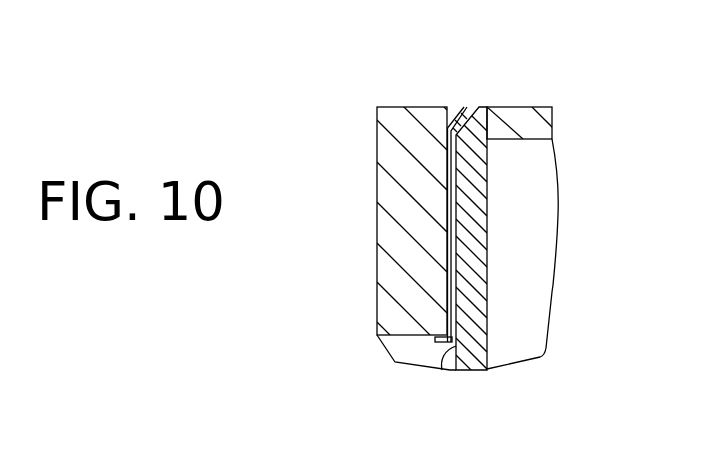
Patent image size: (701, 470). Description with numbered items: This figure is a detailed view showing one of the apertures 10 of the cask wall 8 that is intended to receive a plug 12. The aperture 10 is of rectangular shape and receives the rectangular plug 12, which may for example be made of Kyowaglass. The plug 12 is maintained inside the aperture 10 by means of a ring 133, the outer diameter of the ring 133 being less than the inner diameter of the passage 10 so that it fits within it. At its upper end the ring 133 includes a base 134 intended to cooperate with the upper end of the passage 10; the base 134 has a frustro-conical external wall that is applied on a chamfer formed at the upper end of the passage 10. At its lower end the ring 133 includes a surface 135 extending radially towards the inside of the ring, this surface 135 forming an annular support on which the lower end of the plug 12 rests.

The body 8 is at (533, 111).
The aperture 10 is at (452, 372).
The plug 12 is at (383, 234).
The ring 133 is at (451, 102).
The base 134 is at (467, 107).
The surface 135 is at (442, 342).